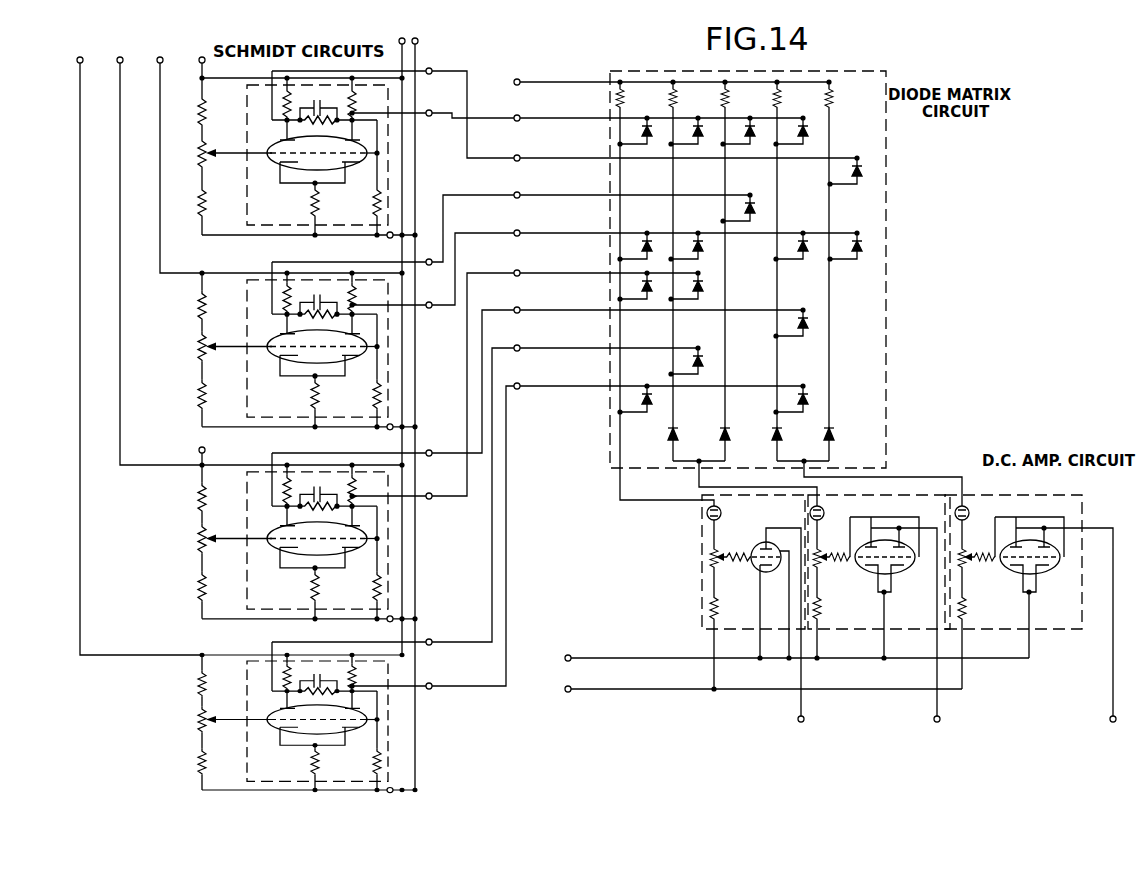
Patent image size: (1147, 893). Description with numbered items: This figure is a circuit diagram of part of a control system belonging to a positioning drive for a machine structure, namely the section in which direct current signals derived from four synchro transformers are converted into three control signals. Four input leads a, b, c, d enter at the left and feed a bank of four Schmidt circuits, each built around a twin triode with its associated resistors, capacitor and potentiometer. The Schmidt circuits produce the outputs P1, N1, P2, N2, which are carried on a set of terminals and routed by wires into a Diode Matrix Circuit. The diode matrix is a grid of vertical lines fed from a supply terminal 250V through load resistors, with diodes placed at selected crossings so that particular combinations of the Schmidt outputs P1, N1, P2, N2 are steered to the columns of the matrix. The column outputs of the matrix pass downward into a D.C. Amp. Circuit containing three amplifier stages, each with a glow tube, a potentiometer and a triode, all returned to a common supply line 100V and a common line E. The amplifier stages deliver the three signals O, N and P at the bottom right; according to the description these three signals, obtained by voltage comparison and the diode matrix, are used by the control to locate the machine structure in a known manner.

The input lead a is at (178, 157).
The input lead b is at (202, 59).
The input lead c is at (138, 348).
The input lead d is at (160, 253).
The Schmidt circuit output P1 is at (349, 106).
The Schmidt circuit output N1 is at (326, 191).
The Schmidt circuit output P2 is at (305, 287).
The Schmidt circuit output N2 is at (283, 379).
The 250 volt supply terminal 250V is at (658, 71).
The +100 volt supply terminal 100V is at (788, 648).
The ground terminal E is at (755, 688).
The signal O is at (802, 730).
The signal N is at (936, 730).
The signal P is at (1113, 730).